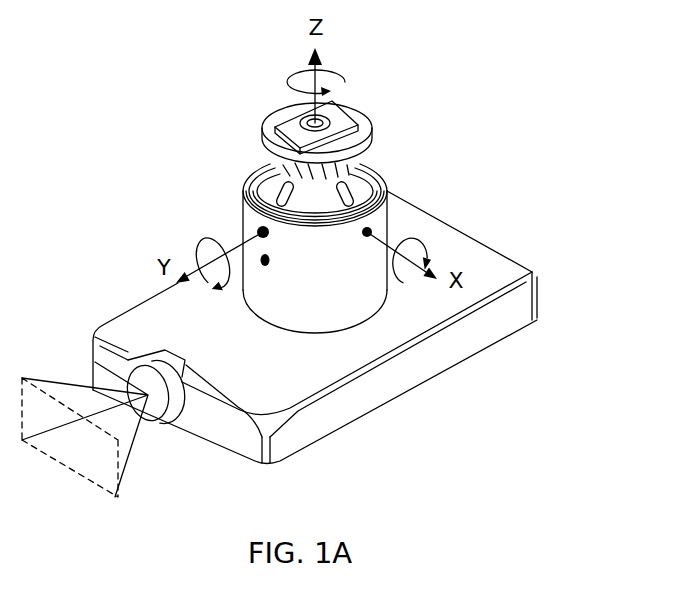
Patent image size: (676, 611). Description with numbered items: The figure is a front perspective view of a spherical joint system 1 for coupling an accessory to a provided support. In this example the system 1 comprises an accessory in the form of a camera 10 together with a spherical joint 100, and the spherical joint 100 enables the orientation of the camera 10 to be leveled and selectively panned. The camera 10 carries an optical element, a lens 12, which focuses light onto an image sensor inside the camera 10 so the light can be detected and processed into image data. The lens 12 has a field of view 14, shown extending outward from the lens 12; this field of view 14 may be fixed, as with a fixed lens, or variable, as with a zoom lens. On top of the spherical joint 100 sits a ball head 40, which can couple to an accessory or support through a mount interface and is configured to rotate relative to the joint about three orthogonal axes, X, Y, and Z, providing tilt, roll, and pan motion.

The spherical joint system 1 is at (151, 114).
The camera 10 is at (536, 284).
The lens 12 is at (150, 398).
The field of view 14 is at (130, 472).
The ball head 40 is at (390, 143).
The spherical joint 100 is at (388, 173).